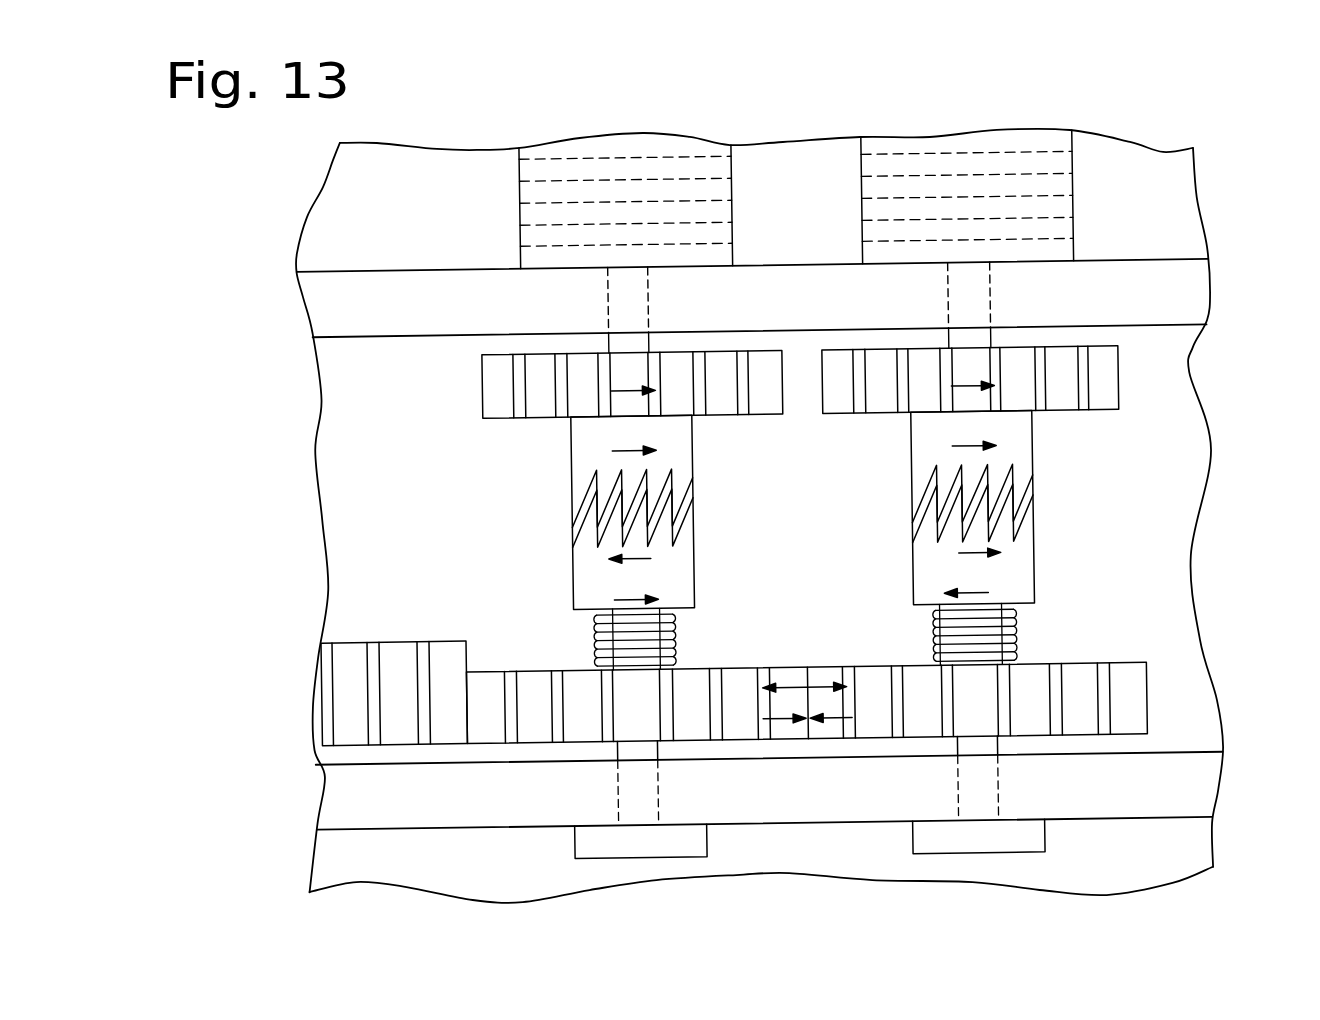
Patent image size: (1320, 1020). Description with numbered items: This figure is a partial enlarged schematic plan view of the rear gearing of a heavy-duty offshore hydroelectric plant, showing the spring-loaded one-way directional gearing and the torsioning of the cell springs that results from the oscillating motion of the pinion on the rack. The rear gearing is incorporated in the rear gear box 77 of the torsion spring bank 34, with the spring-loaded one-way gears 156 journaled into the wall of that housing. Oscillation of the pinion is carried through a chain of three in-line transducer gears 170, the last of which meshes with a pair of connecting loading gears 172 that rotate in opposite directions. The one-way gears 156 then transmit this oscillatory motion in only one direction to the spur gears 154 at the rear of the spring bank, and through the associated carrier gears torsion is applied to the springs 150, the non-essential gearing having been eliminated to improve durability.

The torsion spring bank 34 is at (1243, 127).
The springs 150 is at (933, 146).
The spur gears 154 is at (884, 405).
The spring-loaded one-way gears 156 is at (925, 559).
The transducer gears 170 is at (388, 643).
The connecting loading gears 172 is at (693, 670).
The rear gear box 77 is at (1194, 786).